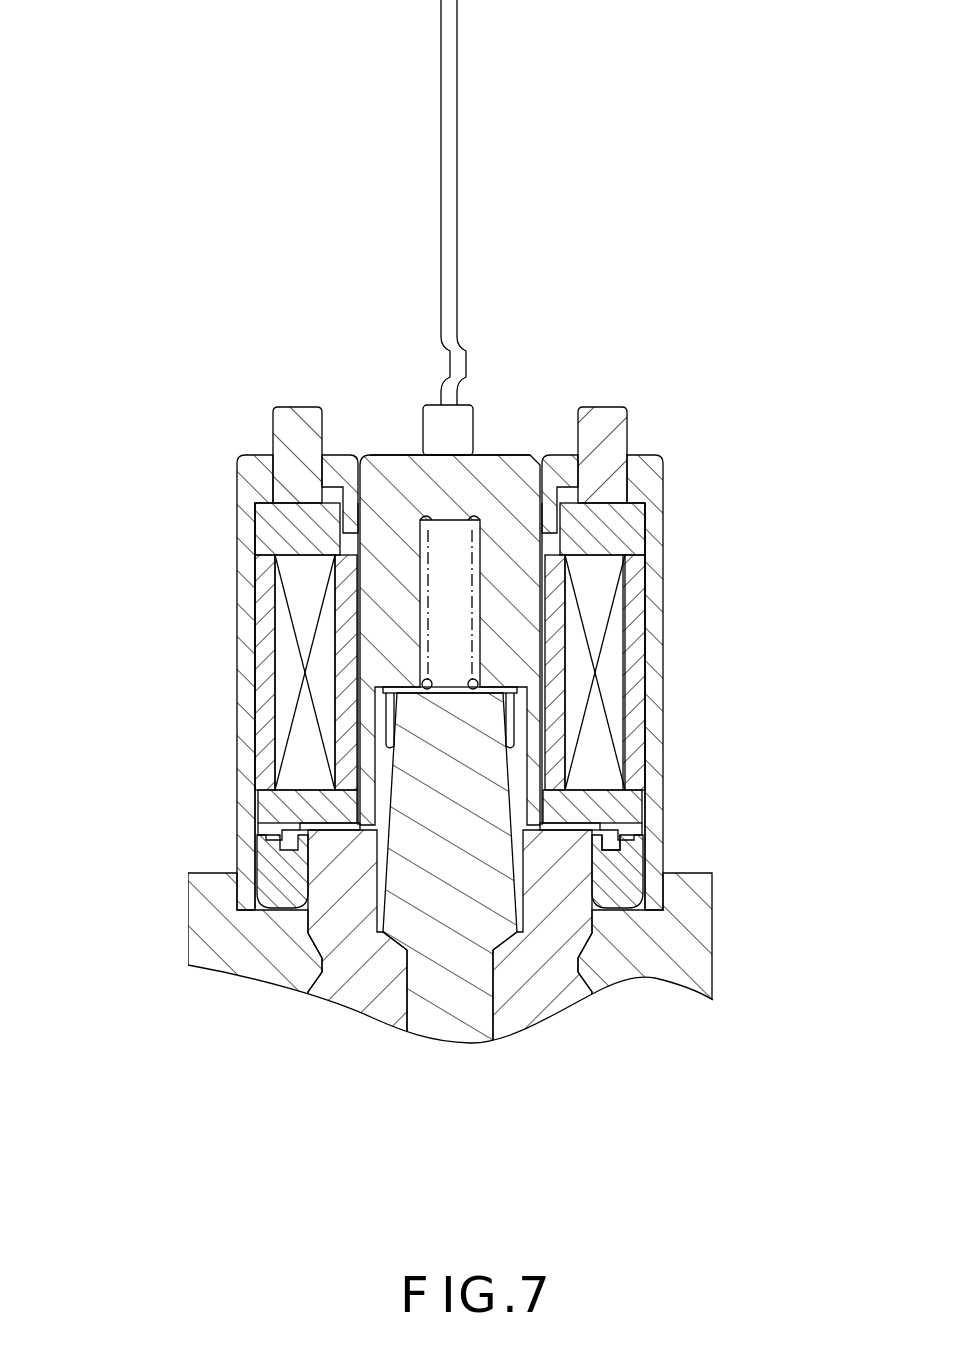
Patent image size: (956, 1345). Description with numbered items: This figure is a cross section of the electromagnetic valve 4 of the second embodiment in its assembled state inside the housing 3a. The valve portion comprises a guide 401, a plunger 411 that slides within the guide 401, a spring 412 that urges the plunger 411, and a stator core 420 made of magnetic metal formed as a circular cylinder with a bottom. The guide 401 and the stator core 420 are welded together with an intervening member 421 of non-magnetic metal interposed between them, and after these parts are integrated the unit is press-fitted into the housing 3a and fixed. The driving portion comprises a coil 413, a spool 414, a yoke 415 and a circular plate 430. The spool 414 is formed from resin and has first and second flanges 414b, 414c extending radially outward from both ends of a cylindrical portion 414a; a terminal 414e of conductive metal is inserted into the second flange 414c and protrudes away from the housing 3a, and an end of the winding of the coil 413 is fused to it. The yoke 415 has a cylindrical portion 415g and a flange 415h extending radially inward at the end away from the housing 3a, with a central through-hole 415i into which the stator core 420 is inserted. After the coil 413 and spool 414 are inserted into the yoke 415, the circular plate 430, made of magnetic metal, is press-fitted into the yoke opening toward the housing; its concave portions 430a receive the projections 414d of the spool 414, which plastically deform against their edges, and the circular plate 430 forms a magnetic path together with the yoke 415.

The electromagnetic valve 4 is at (210, 604).
The housing 3a is at (238, 952).
The guide 401 is at (352, 992).
The plunger 411 is at (458, 1005).
The spring 412 is at (478, 520).
The coil 413 is at (596, 566).
The spool 414 is at (562, 625).
The cylindrical portion 414a is at (596, 680).
The first flange 414b is at (605, 775).
The second flange 414c is at (644, 497).
The projections 414d is at (630, 812).
The terminal 414e is at (458, 60).
The yoke 415 is at (236, 503).
The cylindrical portion 415g is at (240, 558).
The flange 415h is at (350, 470).
The through-hole 415i is at (388, 500).
The stator core 420 is at (512, 490).
The intervening member 421 is at (375, 700).
The circular plate 430 is at (620, 890).
The concave portions 430a is at (612, 853).